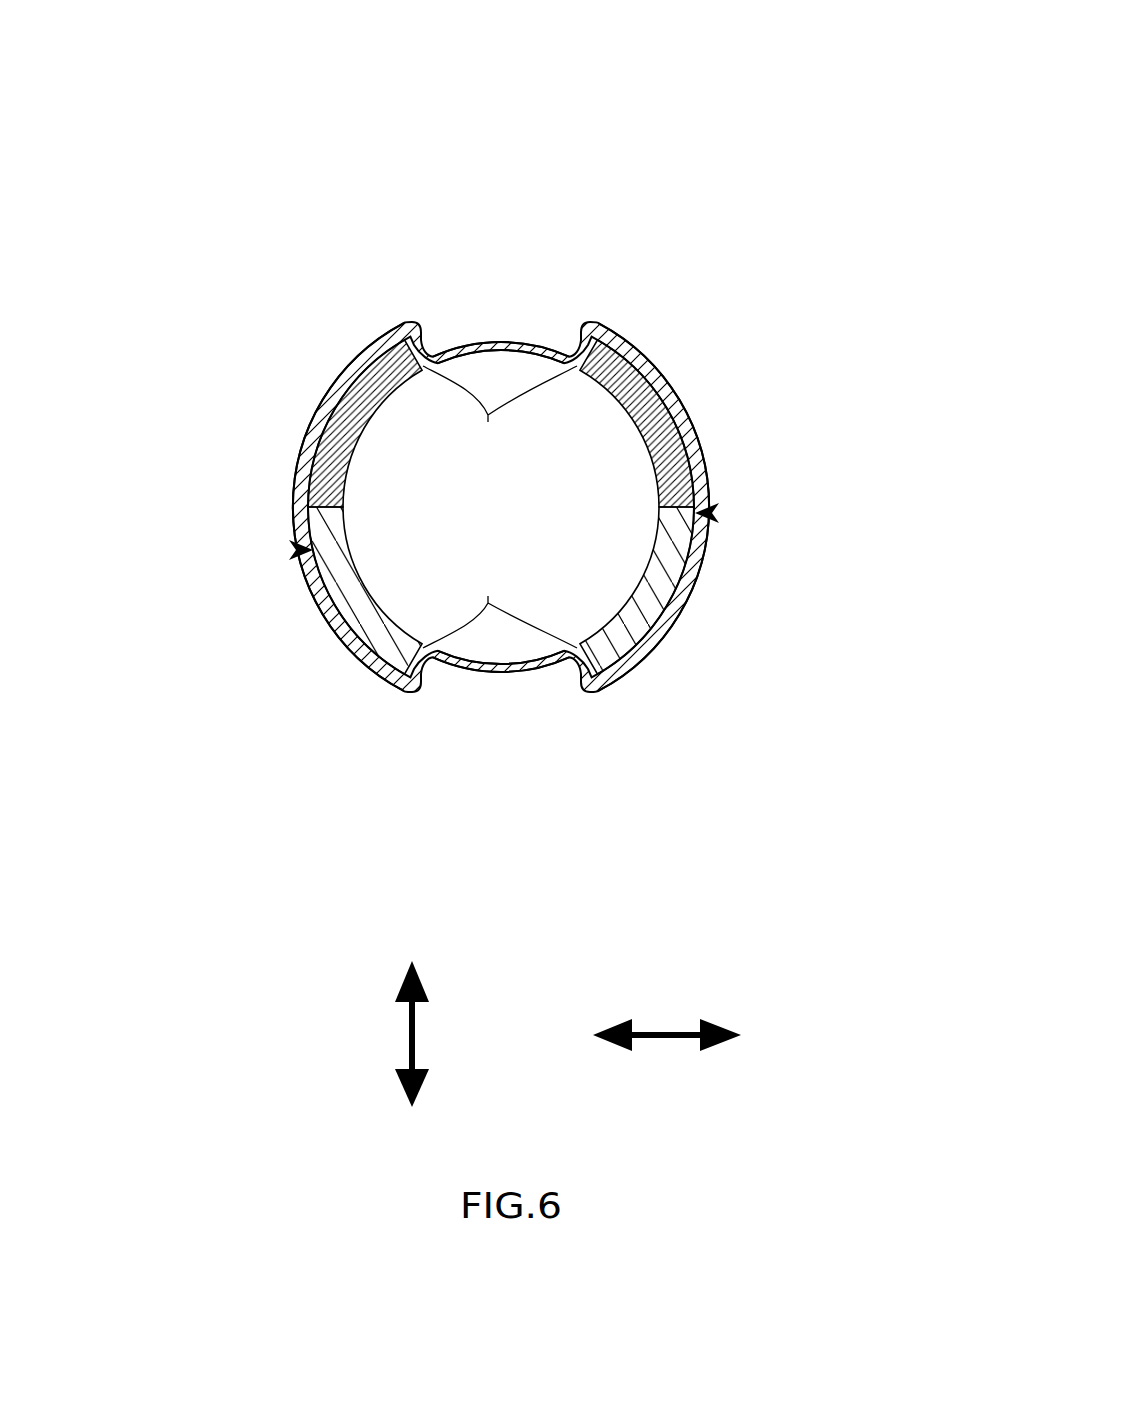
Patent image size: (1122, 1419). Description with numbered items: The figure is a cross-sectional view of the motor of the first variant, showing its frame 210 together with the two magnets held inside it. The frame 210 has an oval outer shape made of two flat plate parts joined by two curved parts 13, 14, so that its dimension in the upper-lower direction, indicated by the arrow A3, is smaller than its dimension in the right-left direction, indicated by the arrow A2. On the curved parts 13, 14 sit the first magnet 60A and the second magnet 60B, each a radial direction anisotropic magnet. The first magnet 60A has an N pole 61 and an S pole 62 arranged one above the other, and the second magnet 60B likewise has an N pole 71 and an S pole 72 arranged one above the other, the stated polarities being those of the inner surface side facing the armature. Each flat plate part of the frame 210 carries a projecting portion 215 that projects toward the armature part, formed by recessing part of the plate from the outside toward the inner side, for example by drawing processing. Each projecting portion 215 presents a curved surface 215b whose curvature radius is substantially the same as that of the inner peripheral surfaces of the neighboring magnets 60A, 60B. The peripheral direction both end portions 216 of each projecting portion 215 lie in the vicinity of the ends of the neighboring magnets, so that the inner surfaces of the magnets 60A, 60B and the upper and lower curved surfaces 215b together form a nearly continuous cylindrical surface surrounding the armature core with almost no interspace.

The frame 210 is at (499, 489).
The projecting portion 215 is at (503, 516).
The curved surface 215b is at (522, 343).
The peripheral direction both end portions 216 is at (500, 507).
The curved part 13 is at (295, 480).
The curved part 14 is at (690, 568).
The first magnet 60A is at (292, 551).
The second magnet 60B is at (712, 513).
The N pole 61 is at (352, 452).
The S pole 62 is at (363, 602).
The N pole 71 is at (655, 435).
The S pole 72 is at (612, 600).
The arrow indicating right-left direction A2 is at (686, 1033).
The arrow indicating upper-lower direction A3 is at (412, 1026).